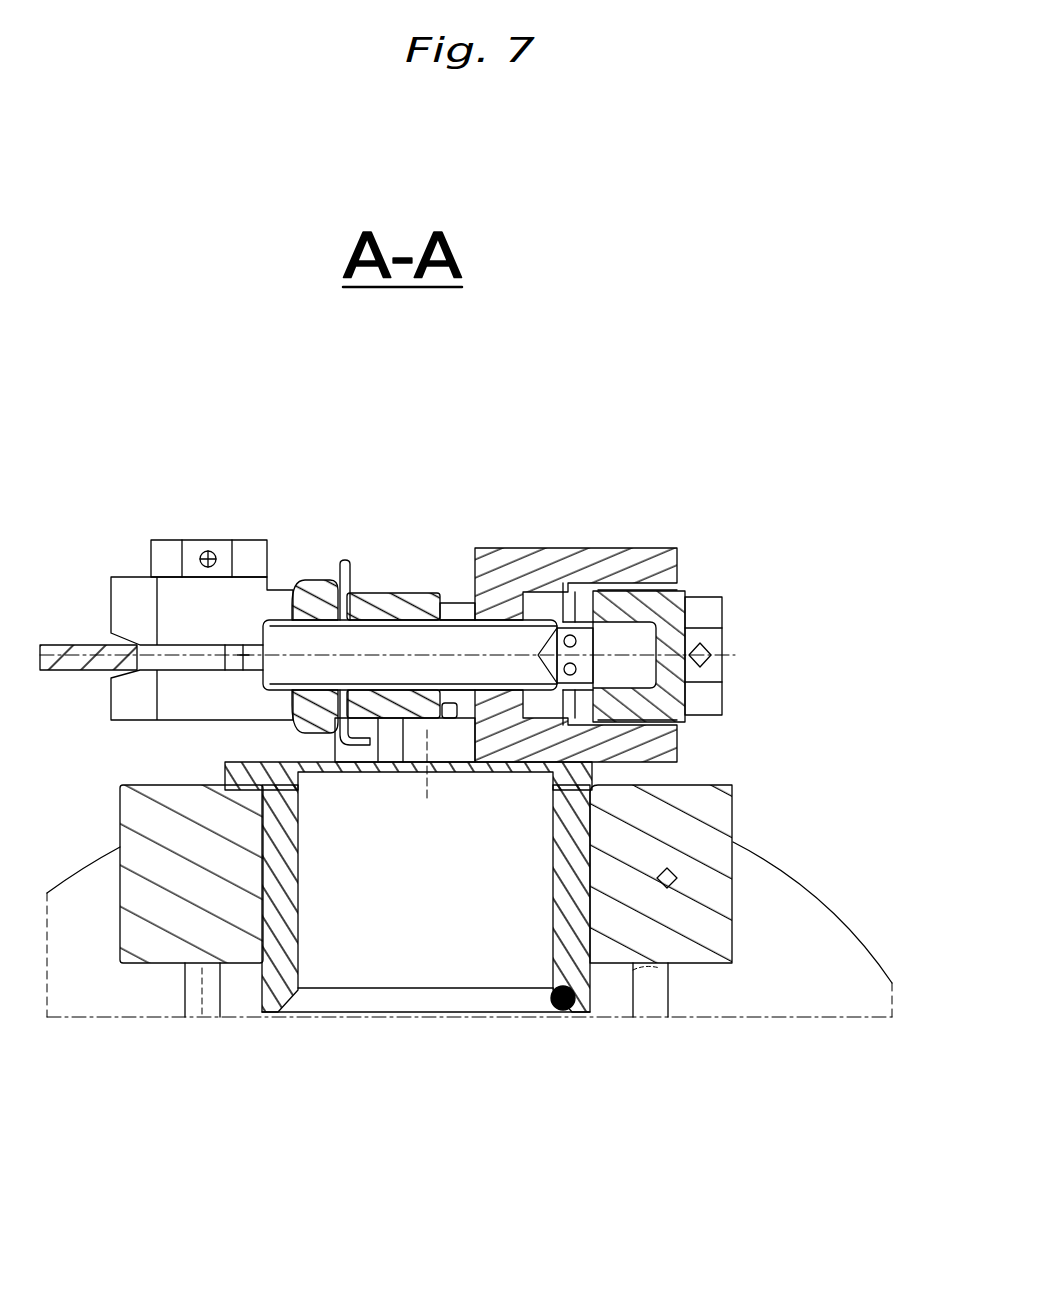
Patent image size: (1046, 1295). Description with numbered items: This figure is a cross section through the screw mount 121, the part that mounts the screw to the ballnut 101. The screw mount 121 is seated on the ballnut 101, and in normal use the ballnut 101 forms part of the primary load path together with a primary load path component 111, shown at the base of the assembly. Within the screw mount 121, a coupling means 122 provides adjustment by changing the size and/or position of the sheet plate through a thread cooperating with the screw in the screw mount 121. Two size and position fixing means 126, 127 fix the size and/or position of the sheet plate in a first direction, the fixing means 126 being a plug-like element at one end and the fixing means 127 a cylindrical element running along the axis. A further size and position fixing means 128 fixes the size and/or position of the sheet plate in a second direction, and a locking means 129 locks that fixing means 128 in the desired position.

The ballnut 101 is at (677, 878).
The primary load path component 111 is at (572, 1008).
The screw mount 121 is at (617, 546).
The coupling means 122 is at (403, 592).
The size and position fixing means 126 is at (725, 675).
The size and position fixing means 127 is at (258, 622).
The size and position fixing means 128 is at (318, 575).
The locking means 129 is at (348, 558).